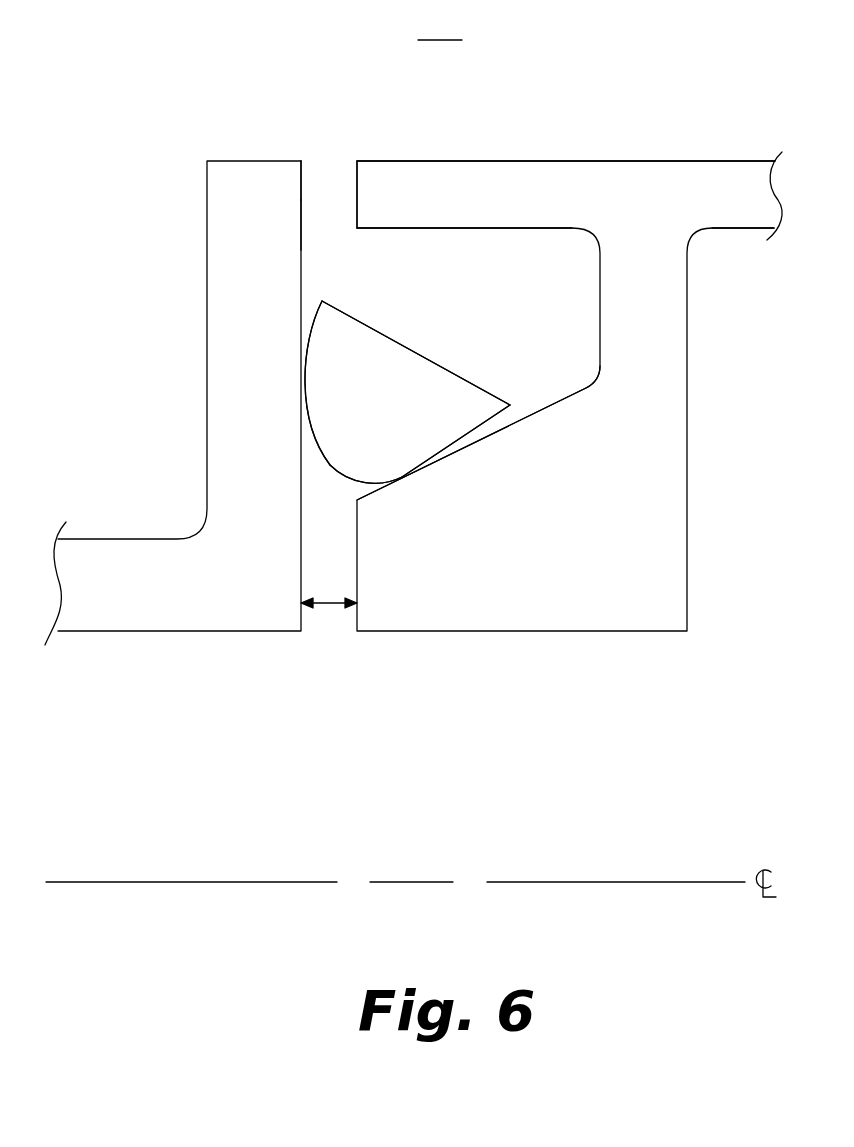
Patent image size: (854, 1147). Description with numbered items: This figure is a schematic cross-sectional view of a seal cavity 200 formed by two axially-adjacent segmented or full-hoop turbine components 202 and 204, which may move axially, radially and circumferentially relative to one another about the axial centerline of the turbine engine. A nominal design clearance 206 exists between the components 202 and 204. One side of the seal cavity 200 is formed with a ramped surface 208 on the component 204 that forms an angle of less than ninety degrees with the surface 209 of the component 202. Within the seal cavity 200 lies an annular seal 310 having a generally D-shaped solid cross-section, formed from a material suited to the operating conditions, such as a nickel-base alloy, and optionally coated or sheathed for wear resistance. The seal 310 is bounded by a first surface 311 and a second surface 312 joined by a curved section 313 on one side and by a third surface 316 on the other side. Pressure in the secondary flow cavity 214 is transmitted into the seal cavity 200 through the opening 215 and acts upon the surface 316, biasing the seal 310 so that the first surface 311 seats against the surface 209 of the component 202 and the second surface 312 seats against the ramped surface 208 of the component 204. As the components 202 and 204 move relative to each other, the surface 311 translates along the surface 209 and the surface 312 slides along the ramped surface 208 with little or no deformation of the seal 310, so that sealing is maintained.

The seal cavity 200 is at (463, 256).
The turbine component 202 is at (172, 633).
The turbine component 204 is at (530, 633).
The nominal design clearance 206 is at (322, 612).
The ramped surface 208 is at (565, 392).
The surface 209 is at (301, 208).
The secondary flow cavity 214 is at (440, 26).
The opening 215 is at (328, 160).
The annular seal 310 is at (380, 292).
The first surface 311 is at (315, 317).
The second surface 312 is at (504, 412).
The curved section 313 is at (324, 468).
The third surface 316 is at (416, 346).